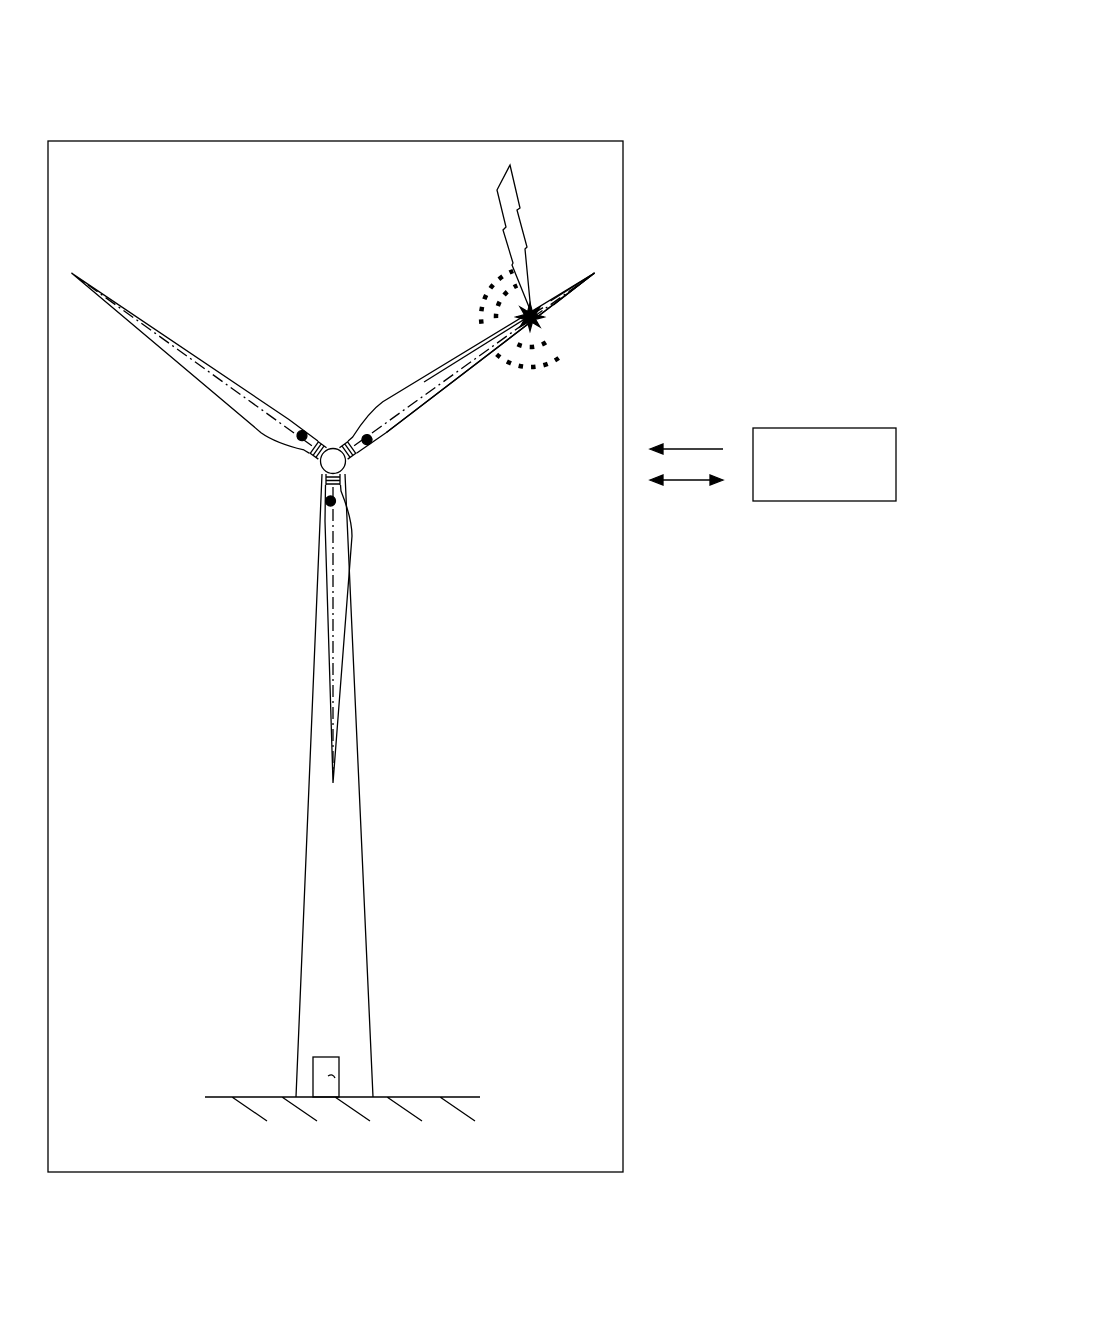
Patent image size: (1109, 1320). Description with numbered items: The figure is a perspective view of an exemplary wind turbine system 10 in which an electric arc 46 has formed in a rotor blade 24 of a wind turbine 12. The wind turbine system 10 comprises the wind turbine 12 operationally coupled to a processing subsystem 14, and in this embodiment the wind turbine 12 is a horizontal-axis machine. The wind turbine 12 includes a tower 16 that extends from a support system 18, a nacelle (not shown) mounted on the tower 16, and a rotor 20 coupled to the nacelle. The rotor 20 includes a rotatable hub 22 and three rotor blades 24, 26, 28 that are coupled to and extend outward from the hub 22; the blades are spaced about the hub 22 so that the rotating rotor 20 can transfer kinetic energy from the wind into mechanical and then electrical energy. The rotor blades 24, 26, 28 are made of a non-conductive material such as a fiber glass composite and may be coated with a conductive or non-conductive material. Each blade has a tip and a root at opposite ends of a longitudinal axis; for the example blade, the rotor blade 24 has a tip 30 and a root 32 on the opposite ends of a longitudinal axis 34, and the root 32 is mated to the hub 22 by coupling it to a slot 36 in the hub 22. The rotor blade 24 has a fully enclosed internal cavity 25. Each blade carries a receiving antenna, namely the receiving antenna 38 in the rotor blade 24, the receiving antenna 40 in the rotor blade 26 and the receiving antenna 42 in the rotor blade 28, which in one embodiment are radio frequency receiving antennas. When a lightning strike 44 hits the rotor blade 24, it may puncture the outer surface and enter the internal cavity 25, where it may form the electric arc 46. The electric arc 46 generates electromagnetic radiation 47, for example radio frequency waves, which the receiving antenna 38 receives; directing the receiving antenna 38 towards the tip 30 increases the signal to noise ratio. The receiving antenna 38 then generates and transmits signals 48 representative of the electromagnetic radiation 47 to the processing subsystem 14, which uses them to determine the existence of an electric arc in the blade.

The wind turbine system 10 is at (800, 58).
The wind turbine 12 is at (626, 170).
The processing subsystem 14 is at (828, 428).
The tower 16 is at (362, 848).
The support system 18 is at (421, 1096).
The rotor 20 is at (329, 502).
The hub 22 is at (320, 467).
The rotor blade 24 is at (436, 372).
The internal cavity 25 is at (397, 404).
The rotor blade 26 is at (193, 356).
The rotor blade 28 is at (352, 566).
The tip 30 is at (582, 276).
The root 32 is at (347, 461).
The longitudinal axis 34 is at (408, 413).
The slot 36 is at (333, 448).
The receiving antenna 38 is at (363, 431).
The receiving antenna 40 is at (302, 431).
The receiving antenna 42 is at (340, 505).
The lightning strike 44 is at (500, 190).
The electric arc 46 is at (541, 328).
The electromagnetic radiation 47 is at (485, 292).
The signals 48 is at (692, 449).